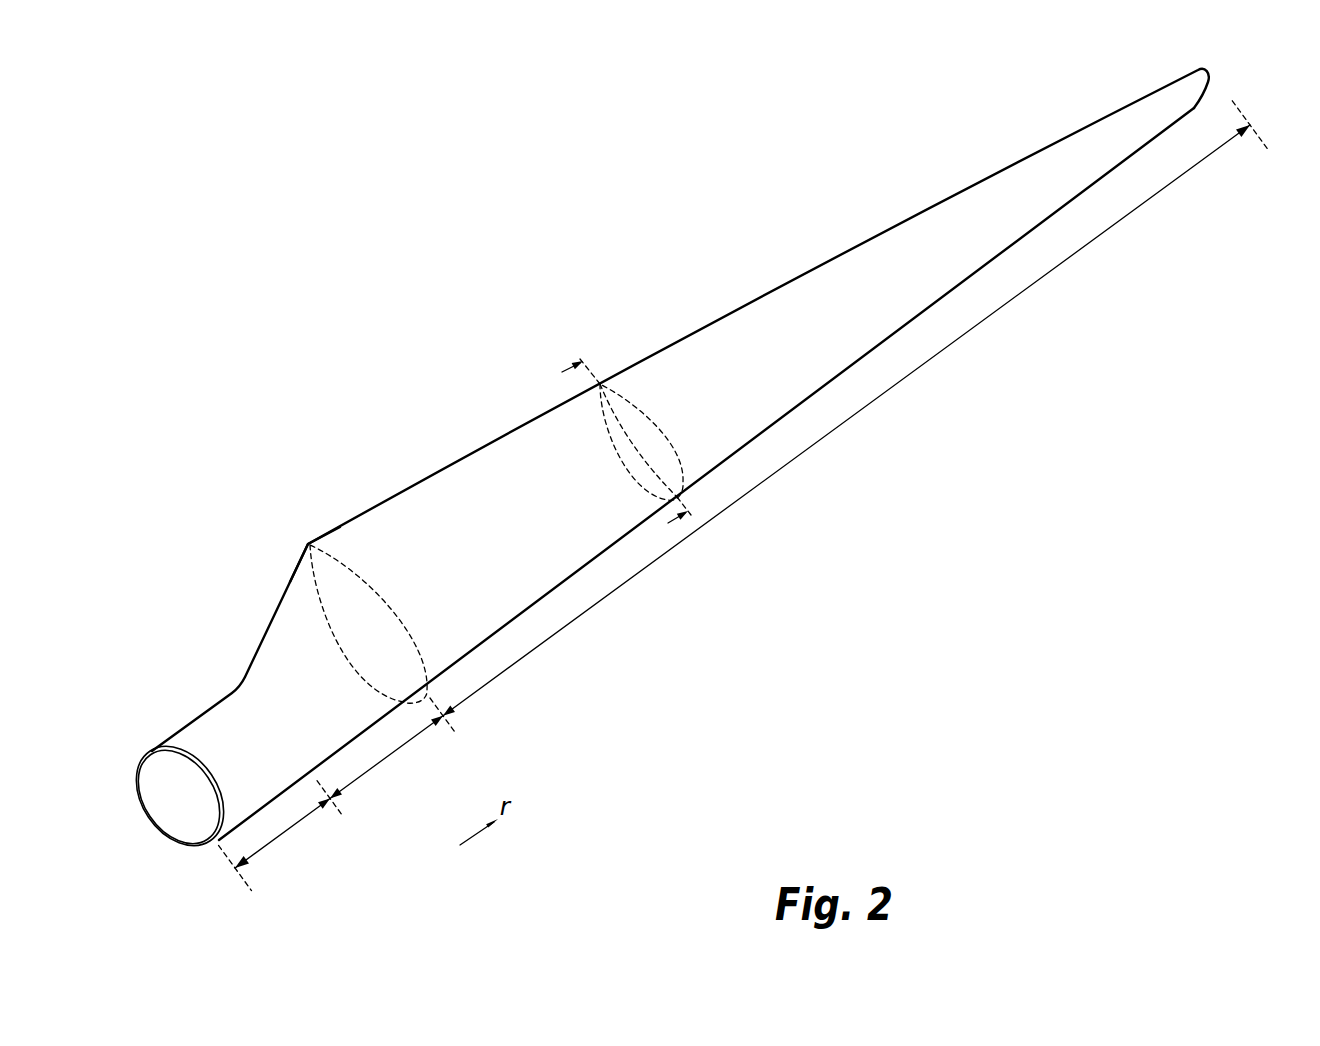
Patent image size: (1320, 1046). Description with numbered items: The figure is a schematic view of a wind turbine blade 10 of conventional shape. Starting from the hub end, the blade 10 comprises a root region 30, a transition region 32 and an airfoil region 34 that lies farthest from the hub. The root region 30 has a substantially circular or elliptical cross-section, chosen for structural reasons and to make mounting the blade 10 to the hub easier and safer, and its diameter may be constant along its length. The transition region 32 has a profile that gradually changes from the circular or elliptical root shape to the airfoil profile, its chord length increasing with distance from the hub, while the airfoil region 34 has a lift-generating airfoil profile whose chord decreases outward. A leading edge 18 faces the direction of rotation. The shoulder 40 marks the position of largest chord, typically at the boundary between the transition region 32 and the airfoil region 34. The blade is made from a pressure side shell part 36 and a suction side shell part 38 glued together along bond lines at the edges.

The wind turbine blade 10 is at (484, 313).
The leading edge 18 is at (887, 341).
The root region 30 is at (283, 833).
The transition region 32 is at (390, 757).
The airfoil region 34 is at (767, 478).
The pressure side shell part 36 is at (178, 748).
The suction side shell part 38 is at (142, 757).
The shoulder 40 is at (310, 543).